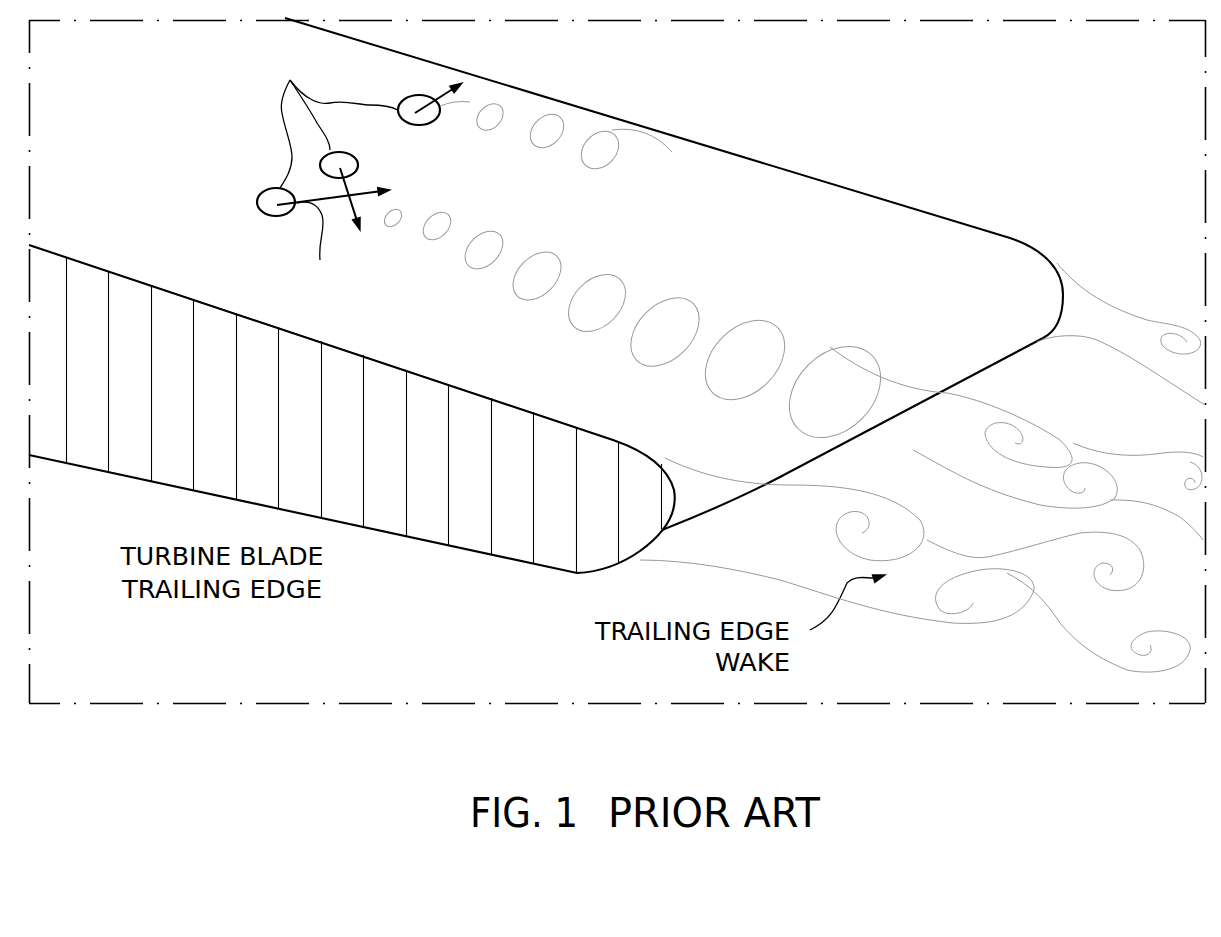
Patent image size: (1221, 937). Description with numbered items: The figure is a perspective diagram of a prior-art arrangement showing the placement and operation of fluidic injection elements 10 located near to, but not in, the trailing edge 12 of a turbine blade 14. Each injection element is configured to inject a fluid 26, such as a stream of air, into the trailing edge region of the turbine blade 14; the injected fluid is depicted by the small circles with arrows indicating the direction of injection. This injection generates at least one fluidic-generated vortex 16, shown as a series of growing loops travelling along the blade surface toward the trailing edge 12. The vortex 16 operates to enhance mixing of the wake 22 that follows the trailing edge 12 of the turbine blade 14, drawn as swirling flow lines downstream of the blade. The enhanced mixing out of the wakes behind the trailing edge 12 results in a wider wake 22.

The fluidic injection elements 10 is at (336, 154).
The trailing edge 12 is at (1077, 233).
The turbine blade 14 is at (863, 217).
The fluidic-generated vortex 16 is at (662, 251).
The wake 22 is at (1078, 646).
The fluid 26 is at (357, 180).